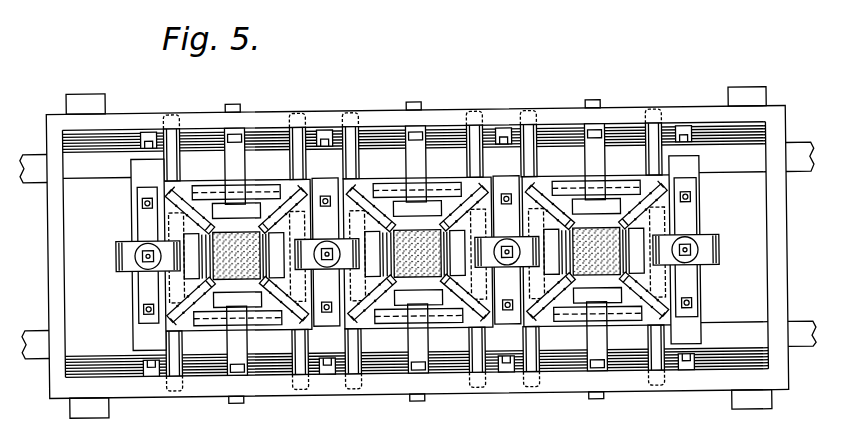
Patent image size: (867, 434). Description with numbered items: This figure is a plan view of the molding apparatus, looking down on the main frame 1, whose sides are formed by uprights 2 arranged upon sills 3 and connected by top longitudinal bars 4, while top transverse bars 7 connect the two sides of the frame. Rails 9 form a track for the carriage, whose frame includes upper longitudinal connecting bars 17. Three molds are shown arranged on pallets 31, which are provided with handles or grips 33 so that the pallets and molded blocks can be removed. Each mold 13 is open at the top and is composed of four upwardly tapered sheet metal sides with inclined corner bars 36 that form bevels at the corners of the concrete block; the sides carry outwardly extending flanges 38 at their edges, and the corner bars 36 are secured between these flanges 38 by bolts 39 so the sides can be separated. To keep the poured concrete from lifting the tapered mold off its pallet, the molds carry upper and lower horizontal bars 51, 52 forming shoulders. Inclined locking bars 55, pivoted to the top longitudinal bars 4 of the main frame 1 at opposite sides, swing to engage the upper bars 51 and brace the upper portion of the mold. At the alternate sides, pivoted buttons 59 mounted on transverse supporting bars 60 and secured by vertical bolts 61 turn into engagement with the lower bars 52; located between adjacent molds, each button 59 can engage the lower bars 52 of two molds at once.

The main frame 1 is at (378, 109).
The uprights 2 is at (88, 96).
The sills 3 is at (712, 135).
The top longitudinal bars 4 is at (445, 118).
The top transverse bars 7 is at (503, 133).
The rails 9 is at (40, 174).
The mold 13 is at (210, 262).
The upper longitudinal connecting bars 17 is at (560, 152).
The pallets 31 is at (304, 180).
The handles or grips 33 is at (175, 147).
The inclined corner bars 36 is at (213, 296).
The outwardly extending flanges 38 is at (197, 205).
The bolts 39 is at (356, 192).
The upper horizontal bars 51 is at (222, 304).
The lower horizontal bars 52 is at (173, 285).
The inclined locking bars 55 is at (238, 168).
The pivoted buttons 59 is at (128, 254).
The transverse supporting bars 60 is at (145, 222).
The vertical bolts 61 is at (142, 197).